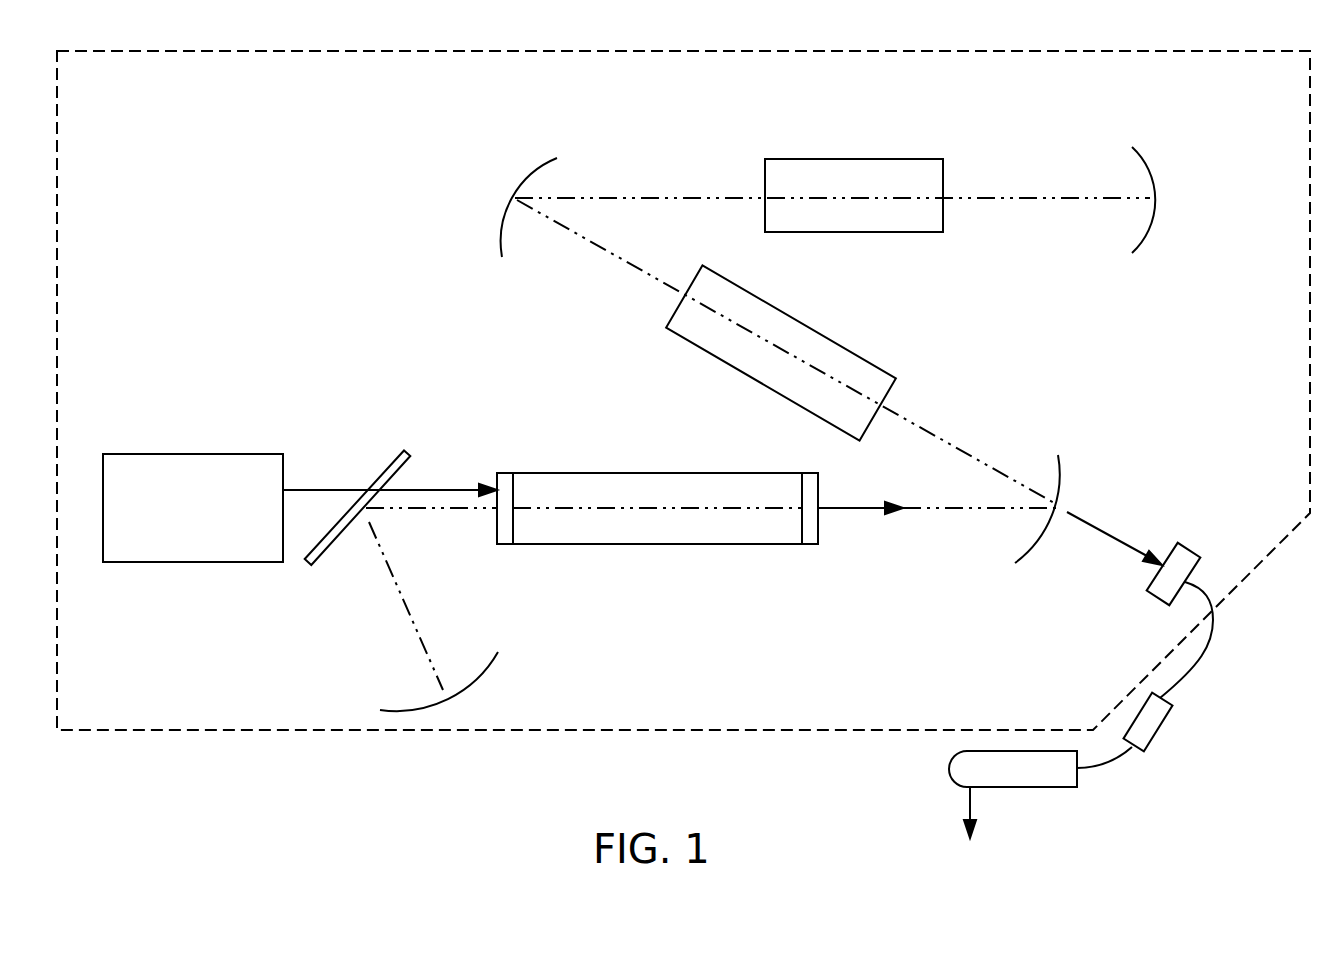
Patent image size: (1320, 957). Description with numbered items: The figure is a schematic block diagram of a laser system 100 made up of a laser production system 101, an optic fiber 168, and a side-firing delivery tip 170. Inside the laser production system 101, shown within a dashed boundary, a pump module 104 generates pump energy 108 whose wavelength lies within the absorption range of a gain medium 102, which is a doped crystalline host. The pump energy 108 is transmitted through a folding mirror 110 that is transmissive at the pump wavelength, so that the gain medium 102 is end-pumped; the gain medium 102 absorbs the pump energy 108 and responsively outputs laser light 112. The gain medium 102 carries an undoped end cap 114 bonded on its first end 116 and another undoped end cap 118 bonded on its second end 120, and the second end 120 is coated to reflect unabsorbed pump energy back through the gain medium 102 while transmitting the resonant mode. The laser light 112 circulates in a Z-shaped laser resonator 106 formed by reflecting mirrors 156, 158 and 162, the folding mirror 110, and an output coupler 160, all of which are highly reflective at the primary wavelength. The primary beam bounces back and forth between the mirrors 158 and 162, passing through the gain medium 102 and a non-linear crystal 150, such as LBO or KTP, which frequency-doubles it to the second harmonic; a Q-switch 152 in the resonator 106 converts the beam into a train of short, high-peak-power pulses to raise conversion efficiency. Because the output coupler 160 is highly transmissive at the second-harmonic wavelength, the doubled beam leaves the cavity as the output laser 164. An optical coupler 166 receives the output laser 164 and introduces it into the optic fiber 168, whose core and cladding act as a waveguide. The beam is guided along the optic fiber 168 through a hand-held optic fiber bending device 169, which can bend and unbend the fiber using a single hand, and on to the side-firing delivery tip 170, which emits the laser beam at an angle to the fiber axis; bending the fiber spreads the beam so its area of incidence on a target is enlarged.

The laser system 100 is at (206, 810).
The laser production system 101 is at (400, 730).
The gain medium 102 is at (657, 508).
The pump module 104 is at (175, 454).
The laser resonator 106 is at (441, 286).
The pump energy 108 is at (455, 487).
The folding mirror 110 is at (390, 460).
The laser light 112 is at (892, 513).
The undoped end cap 114 is at (505, 545).
The first end 116 is at (505, 473).
The undoped end cap 118 is at (813, 545).
The second end 120 is at (812, 473).
The non-linear crystal 150 is at (837, 159).
The Q-switch 152 is at (860, 357).
The reflecting mirror 156 is at (532, 170).
The reflecting mirror 158 is at (1148, 237).
The output coupler 160 is at (1030, 552).
The reflecting mirror 162 is at (482, 680).
The output laser 164 is at (1107, 530).
The optical coupler 166 is at (1185, 545).
The optic fiber 168 is at (1188, 672).
The optic fiber bending device 169 is at (1158, 732).
The side-firing delivery tip 170 is at (1018, 787).